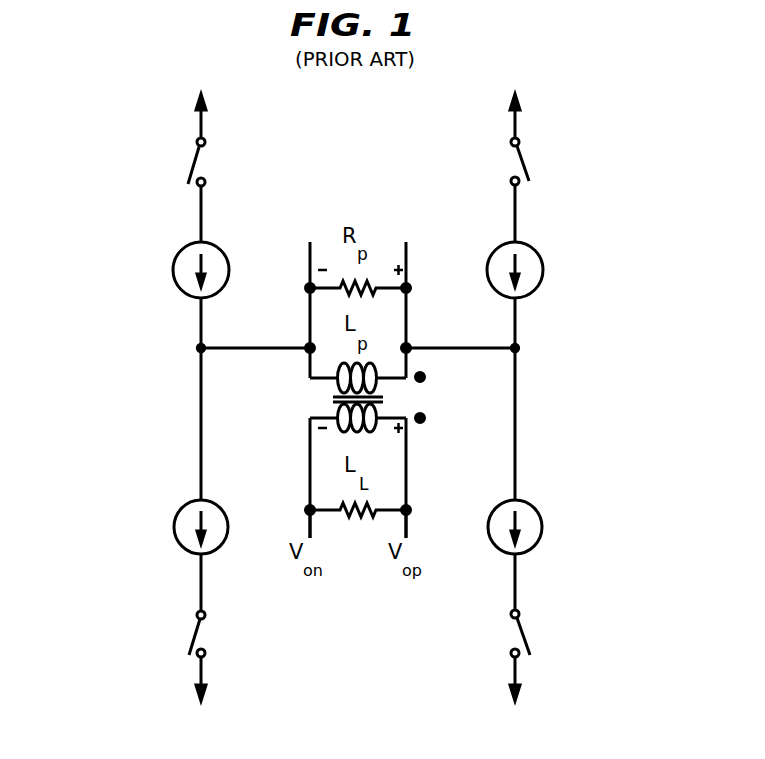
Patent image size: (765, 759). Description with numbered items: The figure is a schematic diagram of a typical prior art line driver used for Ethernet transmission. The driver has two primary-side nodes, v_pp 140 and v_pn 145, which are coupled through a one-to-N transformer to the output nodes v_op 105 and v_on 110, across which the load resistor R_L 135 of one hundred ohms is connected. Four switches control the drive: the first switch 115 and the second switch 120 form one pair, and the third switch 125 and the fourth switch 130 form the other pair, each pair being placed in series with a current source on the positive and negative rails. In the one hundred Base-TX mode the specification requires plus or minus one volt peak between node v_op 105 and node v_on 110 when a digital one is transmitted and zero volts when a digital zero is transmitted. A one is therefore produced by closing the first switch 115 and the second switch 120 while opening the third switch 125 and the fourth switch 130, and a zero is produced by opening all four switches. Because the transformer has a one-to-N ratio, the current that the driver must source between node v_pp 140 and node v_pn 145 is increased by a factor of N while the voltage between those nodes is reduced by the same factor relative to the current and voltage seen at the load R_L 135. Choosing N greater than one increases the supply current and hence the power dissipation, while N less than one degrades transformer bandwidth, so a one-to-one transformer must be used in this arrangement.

The node v_op 105 is at (413, 582).
The node v_on 110 is at (314, 582).
The switch S1 115 is at (575, 157).
The switch S2 120 is at (138, 634).
The switch S3 125 is at (137, 156).
The switch S4 130 is at (578, 634).
The load resistor R_L 135 is at (352, 580).
The node v_pp 140 is at (578, 343).
The node v_pn 145 is at (133, 343).